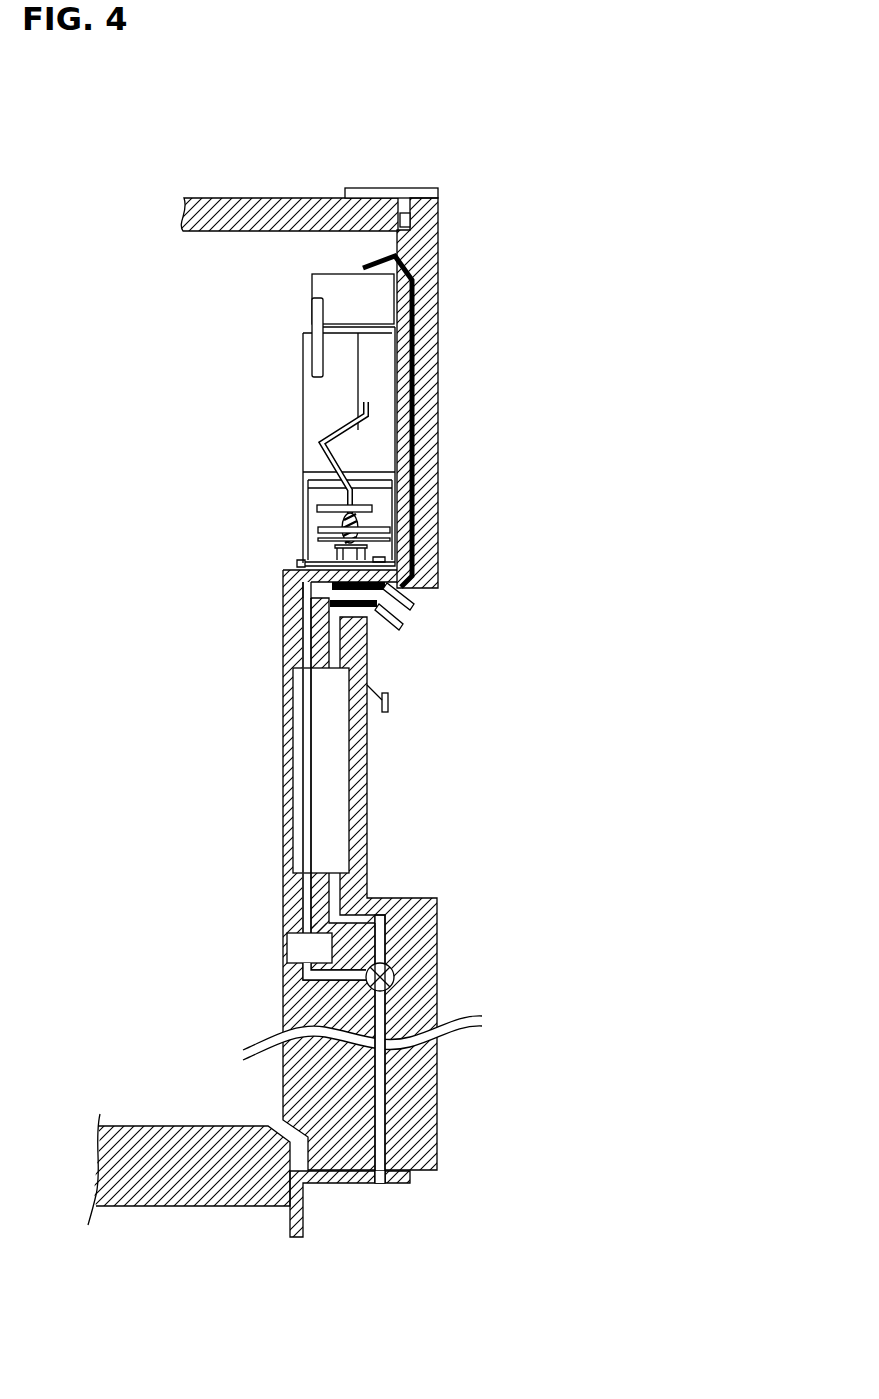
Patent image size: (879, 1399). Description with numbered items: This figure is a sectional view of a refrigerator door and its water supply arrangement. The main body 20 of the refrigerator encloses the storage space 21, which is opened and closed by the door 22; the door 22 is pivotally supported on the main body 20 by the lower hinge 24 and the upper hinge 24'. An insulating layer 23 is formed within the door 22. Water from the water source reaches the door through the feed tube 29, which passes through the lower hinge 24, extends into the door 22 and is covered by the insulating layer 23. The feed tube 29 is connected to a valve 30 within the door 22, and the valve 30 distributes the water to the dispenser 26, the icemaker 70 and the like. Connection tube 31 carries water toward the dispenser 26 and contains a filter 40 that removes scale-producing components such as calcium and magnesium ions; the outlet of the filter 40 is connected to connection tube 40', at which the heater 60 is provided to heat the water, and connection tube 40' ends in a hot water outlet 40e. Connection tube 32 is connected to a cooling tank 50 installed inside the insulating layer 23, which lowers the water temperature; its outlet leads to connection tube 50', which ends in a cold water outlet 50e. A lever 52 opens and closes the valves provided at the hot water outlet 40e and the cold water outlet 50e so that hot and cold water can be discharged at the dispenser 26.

The main body 20 is at (232, 196).
The upper hinge 24' is at (391, 148).
The storage space 21 is at (252, 337).
The icemaker 70 is at (257, 442).
The door 22 is at (478, 446).
The heater 60 is at (438, 586).
The connection tube 40' is at (258, 765).
The connection tube 50' is at (412, 766).
The dispenser 26 is at (445, 623).
The hot water outlet 40e is at (414, 607).
The cold water outlet 50e is at (403, 628).
The cooling tank 50 is at (387, 770).
The lever 52 is at (388, 702).
The connection tube 32 is at (383, 897).
The connection tube 31 is at (304, 898).
The filter 40 is at (280, 956).
The valve 30 is at (395, 977).
The insulating layer 23 is at (422, 1080).
The feed tube 29 is at (382, 1130).
The lower hinge 24 is at (350, 1204).